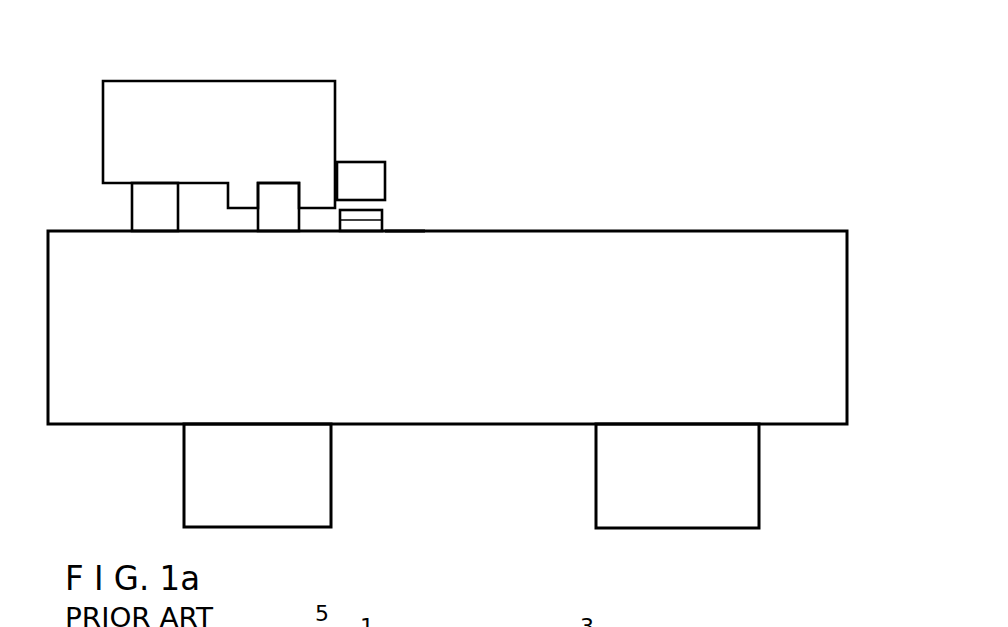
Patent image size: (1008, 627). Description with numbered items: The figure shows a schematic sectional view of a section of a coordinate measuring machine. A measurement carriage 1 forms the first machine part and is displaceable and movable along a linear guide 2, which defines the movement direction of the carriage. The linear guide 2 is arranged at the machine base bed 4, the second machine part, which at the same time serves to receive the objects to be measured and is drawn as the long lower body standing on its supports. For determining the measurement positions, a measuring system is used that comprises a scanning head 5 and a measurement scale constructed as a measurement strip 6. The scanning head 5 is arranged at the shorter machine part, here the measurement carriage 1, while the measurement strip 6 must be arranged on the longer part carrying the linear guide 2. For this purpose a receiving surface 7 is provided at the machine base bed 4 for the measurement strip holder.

The measurement carriage 1 is at (297, 118).
The linear guide 2 is at (153, 198).
The machine base bed 4 is at (470, 265).
The scanning head 5 is at (357, 175).
The measurement strip 6 is at (367, 218).
The receiving surface 7 is at (403, 228).